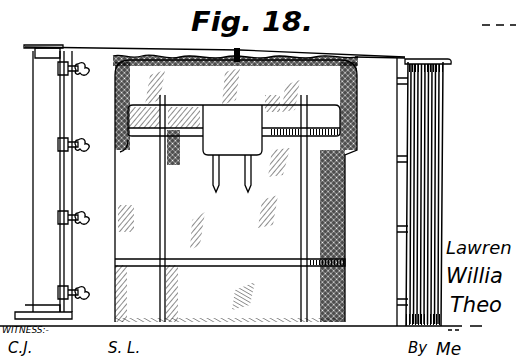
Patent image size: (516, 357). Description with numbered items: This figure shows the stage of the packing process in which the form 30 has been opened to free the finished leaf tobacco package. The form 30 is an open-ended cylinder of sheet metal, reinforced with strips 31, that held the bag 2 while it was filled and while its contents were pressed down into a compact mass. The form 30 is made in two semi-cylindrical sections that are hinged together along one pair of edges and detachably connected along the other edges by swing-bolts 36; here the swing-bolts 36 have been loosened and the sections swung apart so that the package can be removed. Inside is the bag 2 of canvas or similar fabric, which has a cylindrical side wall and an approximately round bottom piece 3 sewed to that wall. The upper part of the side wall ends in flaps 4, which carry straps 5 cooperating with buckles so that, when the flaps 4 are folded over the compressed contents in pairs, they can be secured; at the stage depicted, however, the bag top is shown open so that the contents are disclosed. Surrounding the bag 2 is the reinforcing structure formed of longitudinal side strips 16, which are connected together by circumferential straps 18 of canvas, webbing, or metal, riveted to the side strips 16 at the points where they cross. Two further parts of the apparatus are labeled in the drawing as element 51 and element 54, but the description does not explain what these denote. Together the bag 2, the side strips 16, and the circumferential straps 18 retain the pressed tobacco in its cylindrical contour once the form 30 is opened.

The bag 2 is at (235, 188).
The bottom piece 3 is at (214, 42).
The flaps 4 is at (201, 152).
The straps 5 is at (248, 190).
The side strips 16 is at (159, 220).
The circumferential straps 18 is at (290, 138).
The form 30 is at (441, 133).
The strips 31 is at (37, 50).
The swing-bolts 36 is at (86, 78).
The cap 51 is at (446, 68).
The plate 54 is at (372, 67).